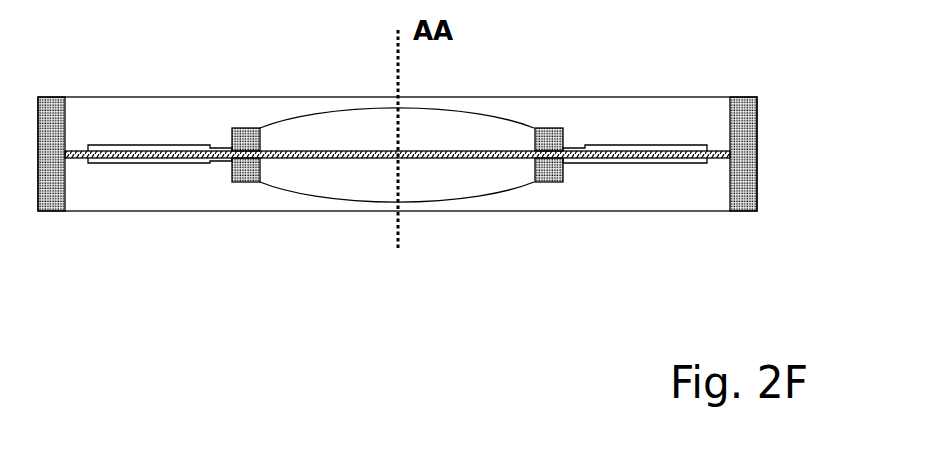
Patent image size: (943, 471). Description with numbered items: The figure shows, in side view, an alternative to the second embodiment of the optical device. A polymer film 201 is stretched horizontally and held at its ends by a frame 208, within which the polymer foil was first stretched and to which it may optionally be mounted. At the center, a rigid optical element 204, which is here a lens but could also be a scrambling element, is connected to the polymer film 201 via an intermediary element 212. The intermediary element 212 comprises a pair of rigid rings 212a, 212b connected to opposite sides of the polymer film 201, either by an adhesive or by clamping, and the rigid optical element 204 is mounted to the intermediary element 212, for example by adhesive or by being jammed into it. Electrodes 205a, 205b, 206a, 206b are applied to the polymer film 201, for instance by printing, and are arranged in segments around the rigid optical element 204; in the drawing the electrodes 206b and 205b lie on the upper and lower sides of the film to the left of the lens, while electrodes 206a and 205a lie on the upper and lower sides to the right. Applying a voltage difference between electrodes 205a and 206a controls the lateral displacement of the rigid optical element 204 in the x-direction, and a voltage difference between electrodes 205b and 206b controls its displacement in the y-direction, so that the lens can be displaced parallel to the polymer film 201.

The polymer film 201 is at (72, 153).
The rigid optical element 204 is at (450, 167).
The electrode 205a is at (592, 162).
The electrode 205b is at (143, 163).
The electrode 206a is at (625, 148).
The electrode 206b is at (177, 148).
The frame 208 is at (742, 145).
The intermediary element 212 is at (358, 171).
The rigid ring 212a is at (243, 135).
The rigid ring 212b is at (237, 180).